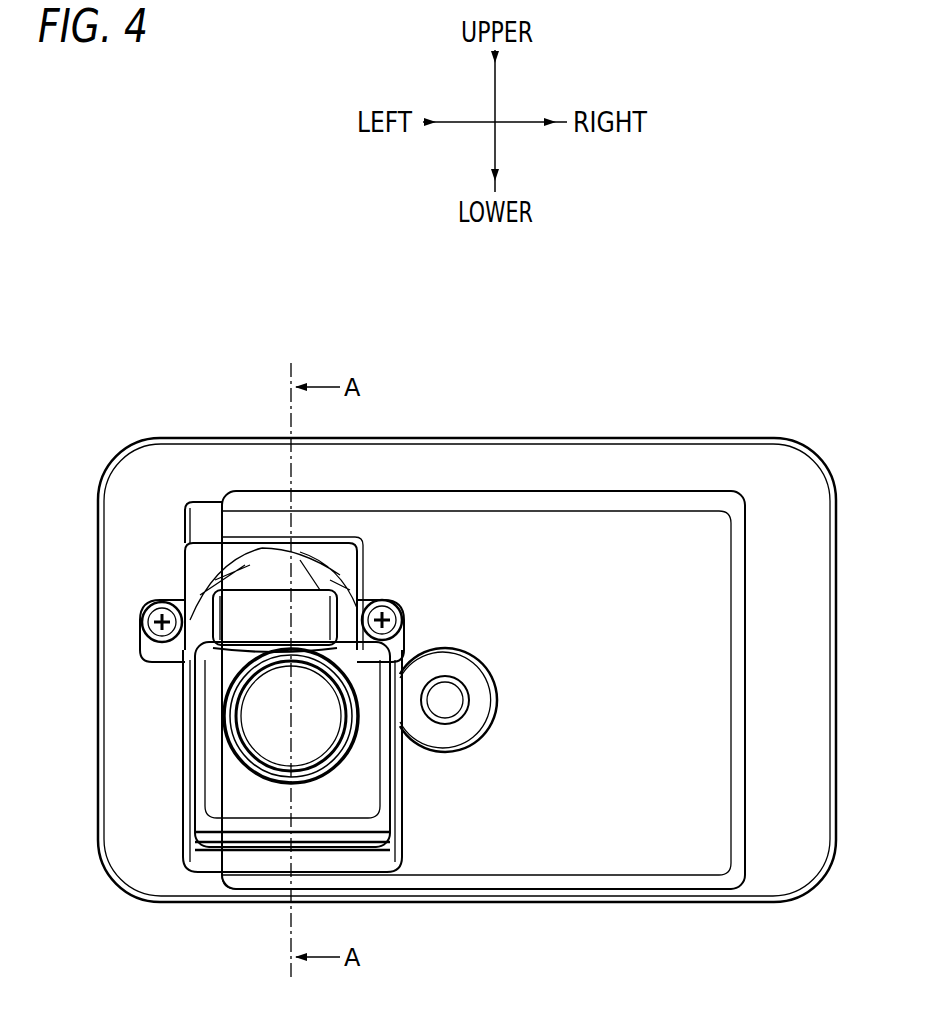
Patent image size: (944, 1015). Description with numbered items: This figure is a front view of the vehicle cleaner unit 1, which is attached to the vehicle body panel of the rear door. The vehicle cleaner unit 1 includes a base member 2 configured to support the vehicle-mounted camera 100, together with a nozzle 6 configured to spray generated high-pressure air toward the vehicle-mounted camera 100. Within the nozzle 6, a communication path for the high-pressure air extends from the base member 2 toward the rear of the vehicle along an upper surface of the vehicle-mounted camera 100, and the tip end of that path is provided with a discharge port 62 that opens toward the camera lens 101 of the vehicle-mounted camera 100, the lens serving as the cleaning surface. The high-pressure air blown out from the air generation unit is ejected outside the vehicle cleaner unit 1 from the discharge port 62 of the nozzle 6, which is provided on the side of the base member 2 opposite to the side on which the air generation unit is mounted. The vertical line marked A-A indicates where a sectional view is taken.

The vehicle cleaner unit 1 is at (596, 346).
The base member 2 is at (790, 627).
The nozzle 6 is at (262, 605).
The discharge port 62 is at (240, 683).
The vehicle-mounted camera 100 is at (262, 795).
The camera lens 101 is at (257, 718).